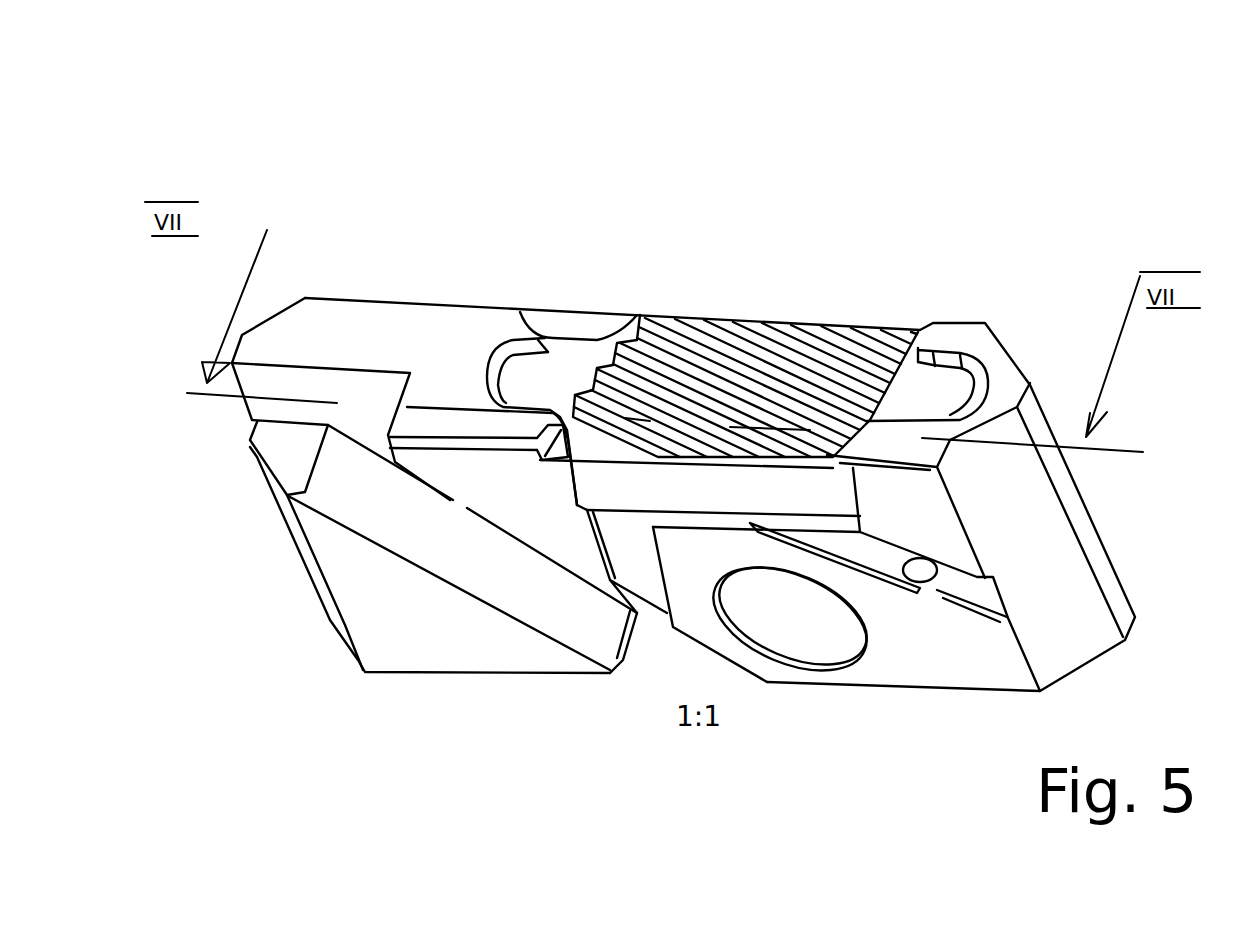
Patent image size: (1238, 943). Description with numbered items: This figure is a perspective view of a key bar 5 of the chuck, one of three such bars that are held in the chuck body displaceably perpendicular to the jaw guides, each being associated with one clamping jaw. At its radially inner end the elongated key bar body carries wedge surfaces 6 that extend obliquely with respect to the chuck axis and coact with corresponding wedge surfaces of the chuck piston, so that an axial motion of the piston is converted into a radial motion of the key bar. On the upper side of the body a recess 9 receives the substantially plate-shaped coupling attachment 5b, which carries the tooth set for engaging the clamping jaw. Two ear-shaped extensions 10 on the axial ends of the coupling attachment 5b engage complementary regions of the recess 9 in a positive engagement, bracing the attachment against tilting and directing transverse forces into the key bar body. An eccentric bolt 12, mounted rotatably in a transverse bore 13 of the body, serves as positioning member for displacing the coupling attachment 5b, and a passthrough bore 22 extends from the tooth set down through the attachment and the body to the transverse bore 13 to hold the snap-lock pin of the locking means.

The key bar 5 is at (395, 287).
The coupling attachment 5b is at (715, 333).
The wedge surfaces 6 is at (507, 602).
The recess 9 is at (525, 340).
The ear-shaped extensions 10 is at (563, 383).
The eccentric bolt 12 is at (802, 635).
The transverse bore 13 is at (857, 655).
The passthrough bore 22 is at (720, 423).